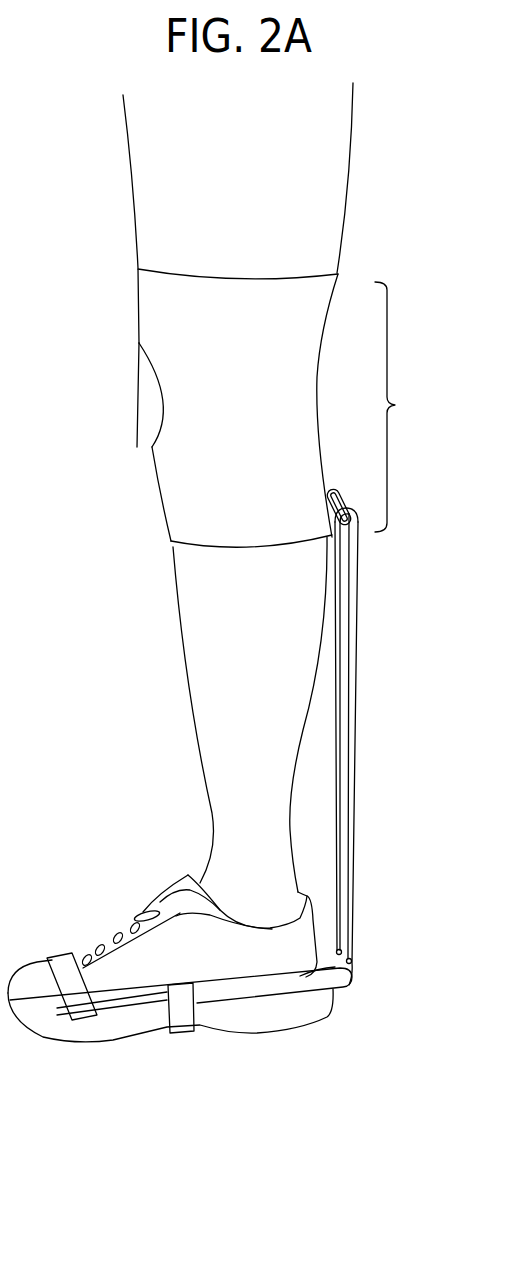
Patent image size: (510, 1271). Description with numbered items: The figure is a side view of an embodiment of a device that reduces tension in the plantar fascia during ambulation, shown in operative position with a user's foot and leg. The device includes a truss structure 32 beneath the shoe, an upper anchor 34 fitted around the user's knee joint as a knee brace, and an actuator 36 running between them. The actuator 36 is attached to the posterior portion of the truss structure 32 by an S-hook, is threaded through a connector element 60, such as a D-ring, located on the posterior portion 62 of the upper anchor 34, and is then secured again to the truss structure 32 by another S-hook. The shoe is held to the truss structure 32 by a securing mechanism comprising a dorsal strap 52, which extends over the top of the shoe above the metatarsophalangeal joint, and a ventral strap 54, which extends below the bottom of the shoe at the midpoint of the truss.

The upper anchor 34 is at (158, 305).
The posterior portion of the upper anchor 62 is at (402, 407).
The connector element 60 is at (345, 507).
The actuator 36 is at (357, 740).
The truss structure 32 is at (132, 1003).
The dorsal strap 52 is at (63, 967).
The ventral strap 54 is at (183, 1033).